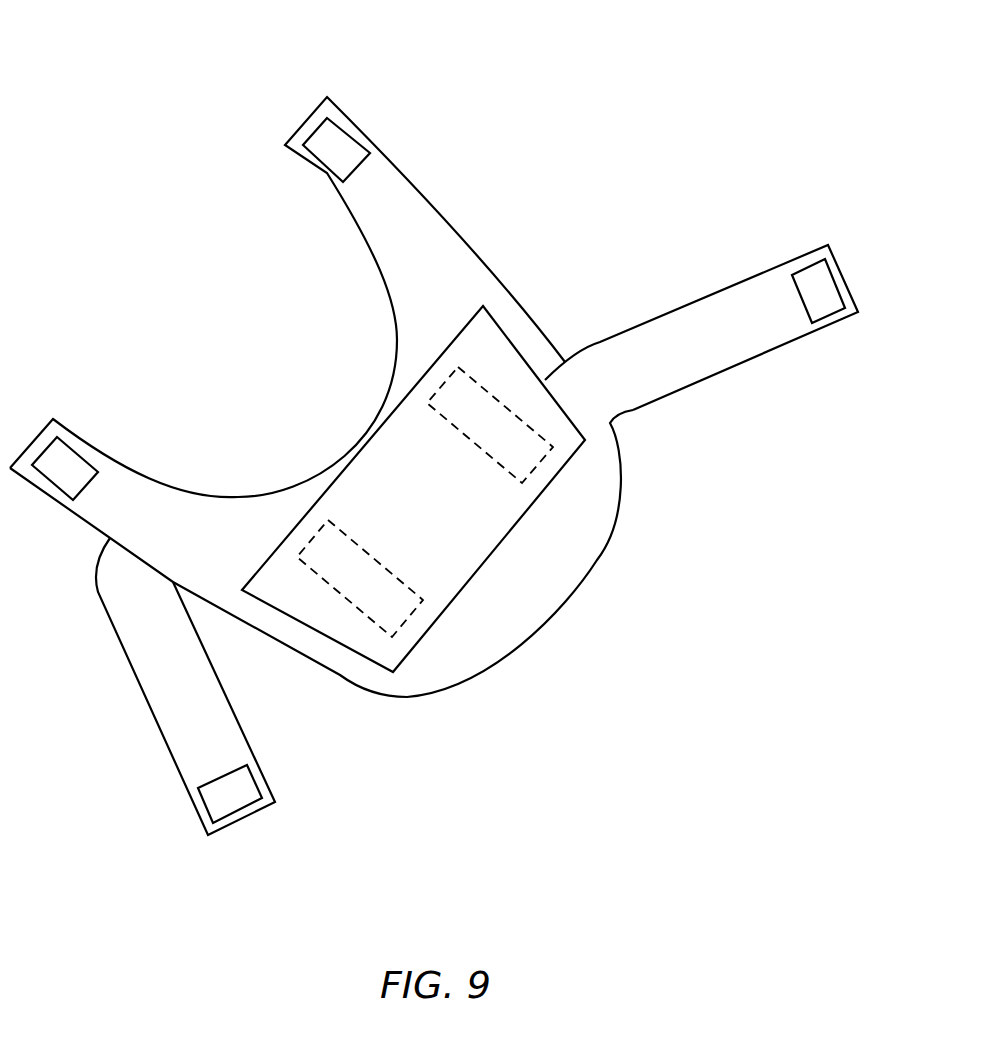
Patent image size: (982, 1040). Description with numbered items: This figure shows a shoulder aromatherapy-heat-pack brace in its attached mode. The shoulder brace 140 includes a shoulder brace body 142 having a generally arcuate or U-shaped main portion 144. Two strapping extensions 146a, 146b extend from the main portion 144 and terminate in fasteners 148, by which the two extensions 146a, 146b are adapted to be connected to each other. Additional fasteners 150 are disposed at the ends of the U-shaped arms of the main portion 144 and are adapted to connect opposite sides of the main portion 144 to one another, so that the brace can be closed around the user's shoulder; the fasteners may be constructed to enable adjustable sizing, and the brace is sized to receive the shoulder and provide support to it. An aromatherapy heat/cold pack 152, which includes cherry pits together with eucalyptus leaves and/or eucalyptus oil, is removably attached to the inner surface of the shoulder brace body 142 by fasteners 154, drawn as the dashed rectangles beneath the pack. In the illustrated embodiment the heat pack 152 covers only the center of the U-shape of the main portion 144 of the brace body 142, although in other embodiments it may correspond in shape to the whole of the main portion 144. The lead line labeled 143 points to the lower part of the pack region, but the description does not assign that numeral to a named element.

The shoulder brace 140 is at (522, 110).
The shoulder brace body 142 is at (483, 255).
The lower fastener region 143 is at (365, 600).
The main portion 144 is at (405, 283).
The strapping extension 146a is at (720, 352).
The strapping extension 146b is at (178, 742).
The fasteners 148 is at (813, 276).
The additional fasteners 150 is at (328, 147).
The aromatherapy heat/cold pack 152 is at (492, 515).
The fasteners 154 is at (478, 418).